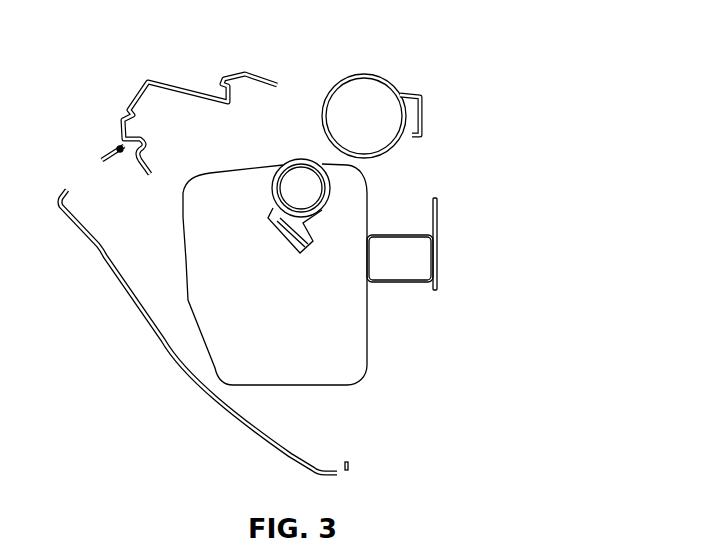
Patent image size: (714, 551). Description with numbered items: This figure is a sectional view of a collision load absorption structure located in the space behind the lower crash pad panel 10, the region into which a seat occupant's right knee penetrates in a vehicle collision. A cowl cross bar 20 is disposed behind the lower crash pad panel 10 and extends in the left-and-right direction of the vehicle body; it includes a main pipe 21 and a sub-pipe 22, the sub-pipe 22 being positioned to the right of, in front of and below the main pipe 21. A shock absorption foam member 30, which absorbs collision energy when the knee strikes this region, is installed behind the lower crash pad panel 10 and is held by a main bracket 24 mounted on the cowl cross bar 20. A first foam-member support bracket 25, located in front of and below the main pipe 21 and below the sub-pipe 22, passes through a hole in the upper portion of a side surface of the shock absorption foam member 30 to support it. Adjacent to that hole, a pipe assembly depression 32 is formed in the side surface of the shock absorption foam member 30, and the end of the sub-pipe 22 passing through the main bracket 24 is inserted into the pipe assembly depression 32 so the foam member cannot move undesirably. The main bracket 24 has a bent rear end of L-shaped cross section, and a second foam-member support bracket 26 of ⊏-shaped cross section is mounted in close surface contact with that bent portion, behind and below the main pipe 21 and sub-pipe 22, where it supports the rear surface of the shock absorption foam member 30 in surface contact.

The lower crash pad panel 10 is at (157, 340).
The cowl cross bar 20 is at (301, 188).
The main pipe 21 is at (373, 77).
The sub-pipe 22 is at (302, 162).
The main bracket 24 is at (437, 218).
The first foam-member support bracket 25 is at (282, 234).
The second foam-member support bracket 26 is at (405, 233).
The shock absorption foam member 30 is at (385, 342).
The pipe assembly depression 32 is at (291, 162).